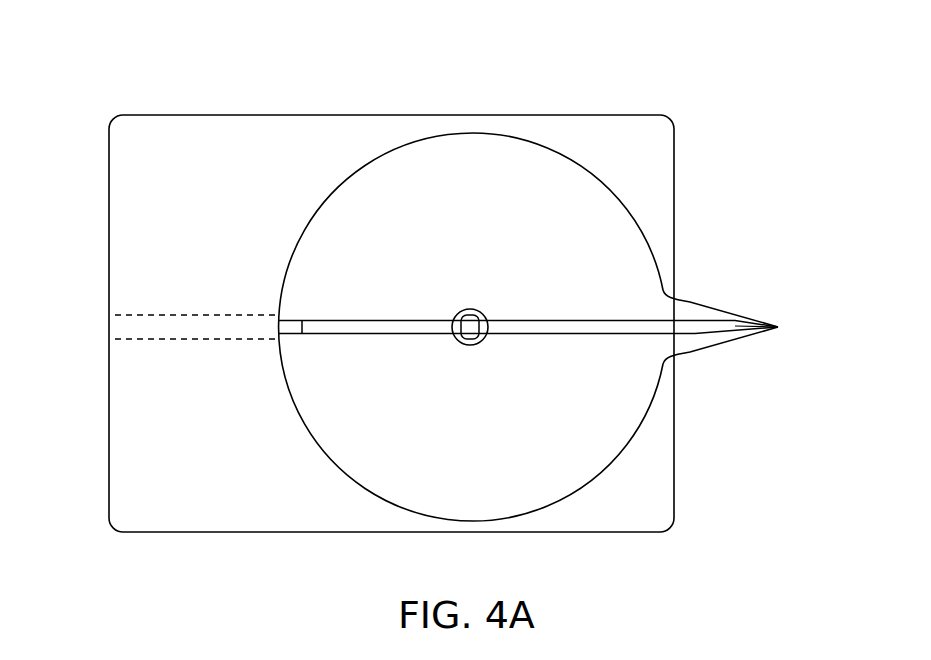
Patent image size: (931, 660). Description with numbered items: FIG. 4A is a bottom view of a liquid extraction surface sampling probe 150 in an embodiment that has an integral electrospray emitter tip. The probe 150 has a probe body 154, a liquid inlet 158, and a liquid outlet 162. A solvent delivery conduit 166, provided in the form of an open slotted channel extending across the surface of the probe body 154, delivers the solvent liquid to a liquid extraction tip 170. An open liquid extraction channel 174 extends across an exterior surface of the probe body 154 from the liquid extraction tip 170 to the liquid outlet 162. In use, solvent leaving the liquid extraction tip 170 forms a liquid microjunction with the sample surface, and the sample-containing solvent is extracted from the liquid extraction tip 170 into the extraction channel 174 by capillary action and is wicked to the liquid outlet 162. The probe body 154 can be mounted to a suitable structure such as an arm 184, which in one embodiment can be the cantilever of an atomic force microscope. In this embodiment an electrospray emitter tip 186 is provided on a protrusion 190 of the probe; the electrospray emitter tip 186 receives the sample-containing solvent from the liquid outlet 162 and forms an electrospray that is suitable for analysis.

The liquid extraction surface sampling probe 150 is at (481, 84).
The probe body 154 is at (377, 158).
The liquid inlet 158 is at (109, 326).
The liquid outlet 162 is at (675, 334).
The solvent delivery conduit 166 is at (380, 320).
The liquid extraction tip 170 is at (472, 346).
The open liquid extraction channel 174 is at (557, 320).
The arm 184 is at (594, 115).
The electrospray emitter tip 186 is at (778, 327).
The protrusion 190 is at (725, 311).